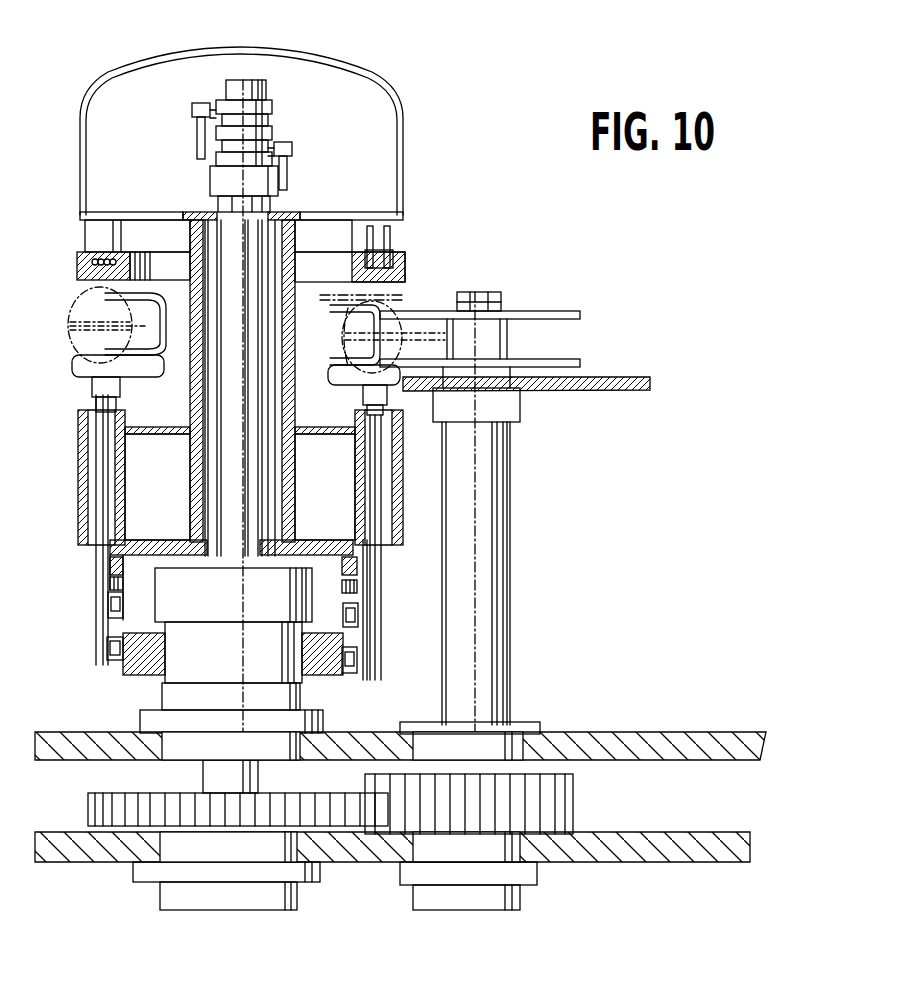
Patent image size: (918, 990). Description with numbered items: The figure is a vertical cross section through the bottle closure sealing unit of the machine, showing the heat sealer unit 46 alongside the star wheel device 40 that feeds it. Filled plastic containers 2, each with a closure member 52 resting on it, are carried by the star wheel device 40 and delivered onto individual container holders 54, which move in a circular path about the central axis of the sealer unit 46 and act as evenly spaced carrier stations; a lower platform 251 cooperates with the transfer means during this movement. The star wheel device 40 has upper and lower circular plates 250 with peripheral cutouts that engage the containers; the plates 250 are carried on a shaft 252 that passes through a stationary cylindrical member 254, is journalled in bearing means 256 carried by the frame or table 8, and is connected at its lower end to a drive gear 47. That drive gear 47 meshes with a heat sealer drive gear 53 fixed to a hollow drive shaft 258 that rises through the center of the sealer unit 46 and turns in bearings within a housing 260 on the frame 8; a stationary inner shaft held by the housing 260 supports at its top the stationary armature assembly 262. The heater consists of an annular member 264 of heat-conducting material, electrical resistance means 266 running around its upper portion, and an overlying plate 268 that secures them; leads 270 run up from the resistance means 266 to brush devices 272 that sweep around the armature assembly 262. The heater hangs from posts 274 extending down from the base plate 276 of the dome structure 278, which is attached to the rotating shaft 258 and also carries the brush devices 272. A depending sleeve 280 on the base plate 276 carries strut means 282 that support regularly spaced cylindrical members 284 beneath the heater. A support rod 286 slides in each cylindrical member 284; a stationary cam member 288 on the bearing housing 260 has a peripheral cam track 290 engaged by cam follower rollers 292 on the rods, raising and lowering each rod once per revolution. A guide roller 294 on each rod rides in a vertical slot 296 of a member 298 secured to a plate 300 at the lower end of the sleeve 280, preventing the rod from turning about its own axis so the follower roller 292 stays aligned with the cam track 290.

The plastic container 2 is at (405, 322).
The frame or table 8 is at (632, 758).
The star wheel device 40 is at (534, 303).
The sealer unit 46 is at (396, 68).
The drive gear 47 is at (578, 814).
The closure member 52 is at (340, 296).
The heat sealer drive gear 53 is at (92, 810).
The container holder 54 is at (132, 368).
The circular plates 250 is at (572, 352).
The lower platform 251 is at (640, 376).
The shaft 252 is at (510, 392).
The stationary cylindrical member 254 is at (505, 522).
The bearing means 256 is at (522, 722).
The hollow drive shaft 258 is at (250, 400).
The bearing housing 260 is at (170, 695).
The stationary armature assembly 262 is at (222, 98).
The annular member 264 is at (403, 283).
The electrical resistance means 266 is at (402, 266).
The overlying plate 268 is at (365, 256).
The leads 270 is at (380, 240).
The brush devices 272 is at (185, 118).
The posts 274 is at (110, 242).
The base plate 276 is at (113, 212).
The dome structure 278 is at (120, 72).
The depending sleeve 280 is at (190, 447).
The strut means 282 is at (142, 472).
The cylindrical members 284 is at (78, 492).
The support rod 286 is at (368, 542).
The stationary cam member 288 is at (328, 667).
The cam track 290 is at (123, 674).
The cam follower rollers 292 is at (360, 662).
The guide roller 294 is at (360, 620).
The vertical slot 296 is at (360, 606).
The member 298 is at (360, 572).
The plate 300 is at (360, 590).